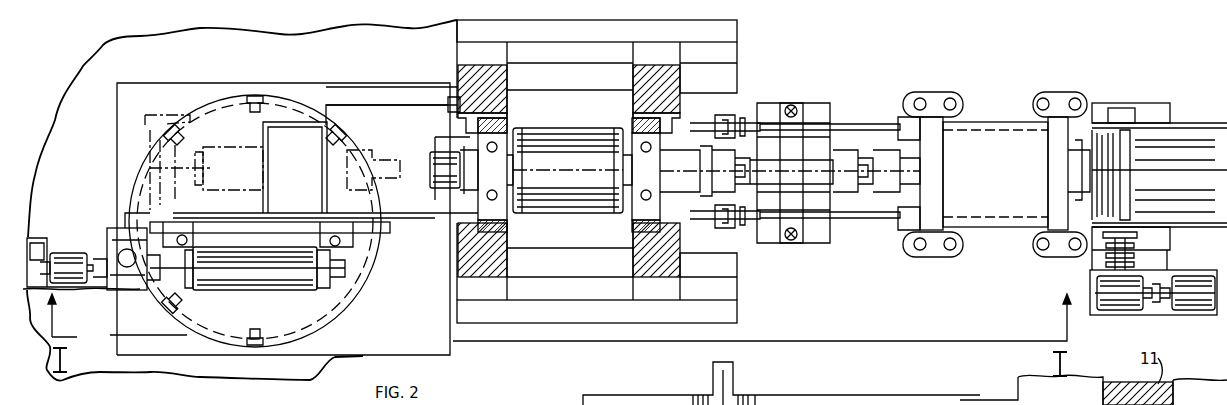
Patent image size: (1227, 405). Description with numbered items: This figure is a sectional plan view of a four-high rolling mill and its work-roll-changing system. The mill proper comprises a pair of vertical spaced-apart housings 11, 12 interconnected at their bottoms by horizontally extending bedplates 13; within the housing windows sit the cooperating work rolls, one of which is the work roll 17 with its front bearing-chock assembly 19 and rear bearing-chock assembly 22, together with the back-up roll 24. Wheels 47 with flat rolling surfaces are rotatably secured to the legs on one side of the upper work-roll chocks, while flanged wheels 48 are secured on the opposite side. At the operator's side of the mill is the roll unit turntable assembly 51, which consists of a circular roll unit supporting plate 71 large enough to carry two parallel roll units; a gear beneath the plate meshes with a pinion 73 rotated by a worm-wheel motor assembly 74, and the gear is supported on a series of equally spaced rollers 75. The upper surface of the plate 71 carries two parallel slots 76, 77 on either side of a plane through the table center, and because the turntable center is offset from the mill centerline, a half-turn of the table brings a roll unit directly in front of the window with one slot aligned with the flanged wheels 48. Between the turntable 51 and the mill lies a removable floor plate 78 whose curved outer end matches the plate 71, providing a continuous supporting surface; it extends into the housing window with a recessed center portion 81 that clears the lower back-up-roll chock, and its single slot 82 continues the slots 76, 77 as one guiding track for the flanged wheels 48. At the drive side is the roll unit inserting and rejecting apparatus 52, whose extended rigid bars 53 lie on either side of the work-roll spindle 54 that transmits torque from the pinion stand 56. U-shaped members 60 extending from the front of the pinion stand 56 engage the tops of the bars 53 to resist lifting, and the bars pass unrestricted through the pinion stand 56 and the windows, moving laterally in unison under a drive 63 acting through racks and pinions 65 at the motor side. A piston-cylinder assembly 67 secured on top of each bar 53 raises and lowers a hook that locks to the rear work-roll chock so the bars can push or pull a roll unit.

The housing 11 is at (470, 80).
The housing 12 is at (673, 78).
The bedplate 13 is at (602, 40).
The work roll 17 is at (585, 198).
The front bearing-chock assembly 19 is at (500, 179).
The rear bearing-chock assembly 22 is at (654, 179).
The back-up roll 24 is at (585, 134).
The wheel 47 is at (505, 131).
The flanged wheel 48 is at (505, 222).
The roll unit turntable assembly 51 is at (243, 348).
The roll unit inserting and rejecting apparatus 52 is at (870, 226).
The rigid bar 53 is at (772, 106).
The work-roll spindle 54 is at (845, 155).
The pinion stand 56 is at (993, 104).
The U-shaped member 60 is at (905, 108).
The drive 63 is at (1190, 298).
The pinion 65 is at (1120, 112).
The piston-cylinder assembly 67 is at (735, 122).
The circular roll unit supporting plate 71 is at (247, 315).
The pinion 73 is at (100, 240).
The worm-wheel motor assembly 74 is at (74, 280).
The roller 75 is at (283, 96).
The slot 76 is at (238, 210).
The slot 77 is at (290, 230).
The removable floor plate 78 is at (398, 112).
The recessed center portion 81 is at (453, 222).
The slot 82 is at (424, 210).